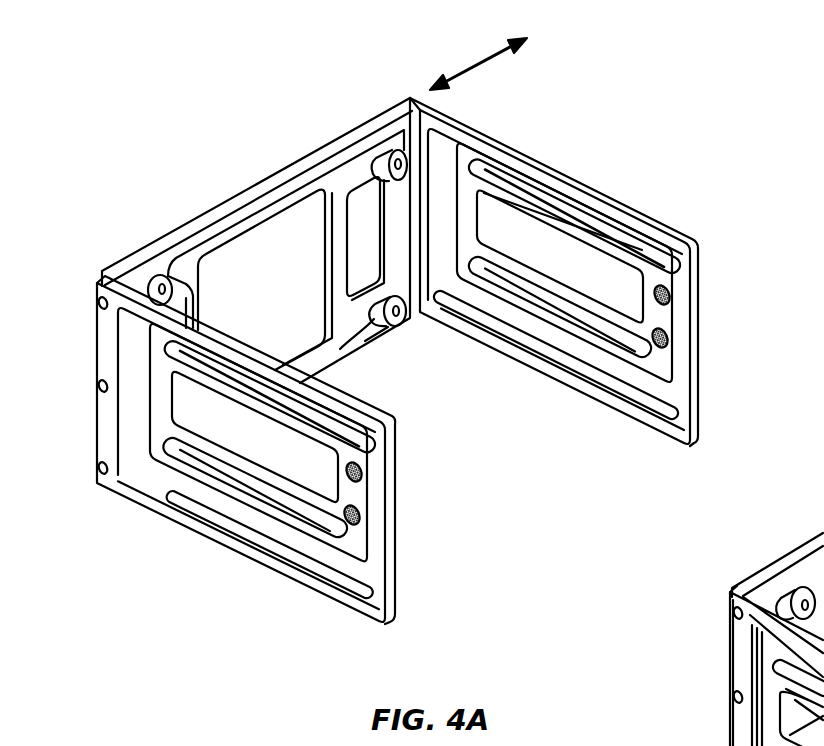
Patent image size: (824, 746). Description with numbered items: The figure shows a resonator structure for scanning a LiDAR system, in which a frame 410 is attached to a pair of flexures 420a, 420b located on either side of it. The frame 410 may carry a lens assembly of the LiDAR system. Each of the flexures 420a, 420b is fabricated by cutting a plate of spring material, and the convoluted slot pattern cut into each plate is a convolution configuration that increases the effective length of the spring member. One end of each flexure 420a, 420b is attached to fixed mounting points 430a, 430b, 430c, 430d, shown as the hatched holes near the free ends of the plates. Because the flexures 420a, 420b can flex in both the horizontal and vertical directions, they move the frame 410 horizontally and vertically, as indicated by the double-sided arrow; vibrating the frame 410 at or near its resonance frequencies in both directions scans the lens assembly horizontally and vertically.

The frame 410 is at (273, 170).
The flexure 420a is at (188, 517).
The flexure 420b is at (592, 185).
The fixed mounting point 430a is at (360, 517).
The fixed mounting point 430b is at (362, 473).
The fixed mounting point 430c is at (668, 341).
The fixed mounting point 430d is at (670, 296).